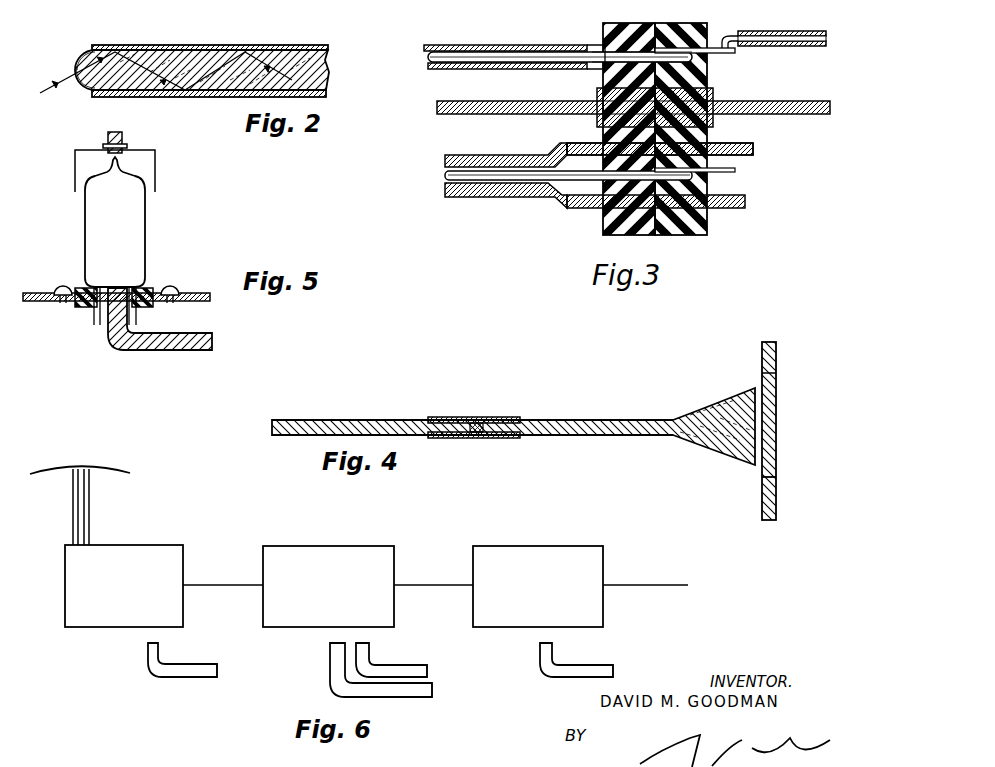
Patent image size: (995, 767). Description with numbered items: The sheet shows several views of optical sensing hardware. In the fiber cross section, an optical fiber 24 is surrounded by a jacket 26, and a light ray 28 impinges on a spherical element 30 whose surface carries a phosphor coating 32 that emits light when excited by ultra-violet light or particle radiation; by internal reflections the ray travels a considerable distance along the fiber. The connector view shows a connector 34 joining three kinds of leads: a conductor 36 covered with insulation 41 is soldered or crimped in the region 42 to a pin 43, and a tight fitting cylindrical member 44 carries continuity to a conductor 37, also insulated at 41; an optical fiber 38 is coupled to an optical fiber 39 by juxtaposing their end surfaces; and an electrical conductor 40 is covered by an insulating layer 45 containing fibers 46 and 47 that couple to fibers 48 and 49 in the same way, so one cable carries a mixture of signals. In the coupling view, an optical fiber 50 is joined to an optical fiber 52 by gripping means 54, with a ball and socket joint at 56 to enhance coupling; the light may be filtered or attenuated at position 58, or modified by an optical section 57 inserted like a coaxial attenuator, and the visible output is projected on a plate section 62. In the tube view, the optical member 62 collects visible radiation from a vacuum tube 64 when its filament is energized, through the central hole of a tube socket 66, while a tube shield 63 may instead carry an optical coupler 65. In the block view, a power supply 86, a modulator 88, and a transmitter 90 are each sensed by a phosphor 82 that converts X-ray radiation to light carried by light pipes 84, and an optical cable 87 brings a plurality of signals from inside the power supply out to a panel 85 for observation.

In FIG. 2, the optical fiber 24 is at (190, 46).
In FIG. 2, the jacket 26 is at (262, 47).
In FIG. 2, the light ray 28 is at (207, 78).
In FIG. 2, the spherical element 30 is at (89, 57).
In FIG. 2, the phosphor coating 32 is at (74, 70).
In FIG. 3, the connector 34 is at (707, 232).
In FIG. 3, the conductor 36 is at (461, 56).
In FIG. 3, the conductor 37 is at (790, 32).
In FIG. 3, the optical fiber 38 is at (480, 101).
In FIG. 3, the optical fiber 39 is at (785, 101).
In FIG. 3, the electrical conductor 40 is at (478, 171).
In FIG. 3, the insulation 41 is at (517, 46).
In FIG. 3, the connection region 42 is at (598, 54).
In FIG. 3, the pin 43 is at (600, 63).
In FIG. 3, the cylindrical member 44 is at (700, 47).
In FIG. 3, the insulating layer 45 is at (517, 158).
In FIG. 3, the optical fiber 46 is at (573, 146).
In FIG. 3, the optical fiber 47 is at (575, 204).
In FIG. 3, the optical fiber 48 is at (748, 143).
In FIG. 3, the optical fiber 49 is at (745, 200).
In FIG. 4, the optical fiber 50 is at (338, 420).
In FIG. 4, the optical fiber 52 is at (586, 420).
In FIG. 4, the gripping means 54 is at (447, 417).
In FIG. 4, the ball and socket joint 56 is at (478, 422).
In FIG. 4, the optical section 57 is at (479, 433).
In FIG. 4, the filtering position 58 is at (777, 468).
In FIG. 5, the optical member 62 is at (168, 337).
In FIG. 4, the optical member 62 is at (777, 366).
In FIG. 5, the tube shield 63 is at (157, 181).
In FIG. 5, the vacuum tube 64 is at (147, 225).
In FIG. 5, the optical coupler 65 is at (122, 141).
In FIG. 5, the tube socket 66 is at (140, 290).
In FIG. 6, the phosphor 82 is at (156, 642).
In FIG. 6, the optical light pipe 84 is at (205, 669).
In FIG. 6, the panel 85 is at (116, 474).
In FIG. 6, the power supply 86 is at (158, 548).
In FIG. 6, the optical cable 87 is at (80, 508).
In FIG. 6, the modulator 88 is at (363, 552).
In FIG. 6, the transmitter 90 is at (578, 553).